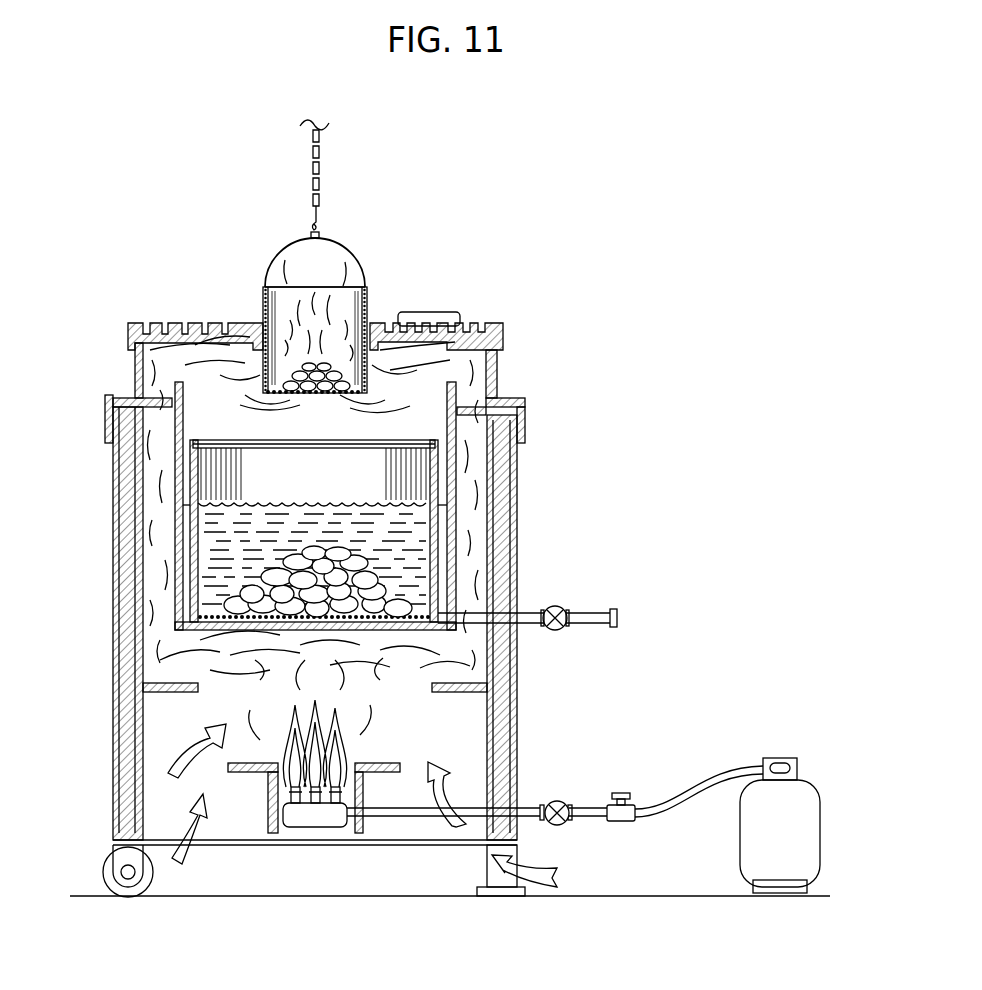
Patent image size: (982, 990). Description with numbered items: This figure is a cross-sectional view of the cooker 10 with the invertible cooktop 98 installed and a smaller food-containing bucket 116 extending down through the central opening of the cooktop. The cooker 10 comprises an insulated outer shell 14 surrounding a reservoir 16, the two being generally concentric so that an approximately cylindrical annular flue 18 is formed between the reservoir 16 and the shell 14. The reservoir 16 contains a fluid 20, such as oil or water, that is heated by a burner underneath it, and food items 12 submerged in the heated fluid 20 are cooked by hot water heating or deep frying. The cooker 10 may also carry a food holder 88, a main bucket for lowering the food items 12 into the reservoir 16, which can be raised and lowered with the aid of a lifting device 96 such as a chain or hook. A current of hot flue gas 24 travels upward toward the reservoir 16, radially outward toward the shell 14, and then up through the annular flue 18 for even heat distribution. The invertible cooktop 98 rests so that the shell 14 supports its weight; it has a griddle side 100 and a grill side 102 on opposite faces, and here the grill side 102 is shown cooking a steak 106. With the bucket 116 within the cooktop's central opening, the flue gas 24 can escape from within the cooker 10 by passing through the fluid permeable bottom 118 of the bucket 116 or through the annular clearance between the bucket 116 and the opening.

The cooker 10 is at (645, 253).
The food items 12 is at (345, 564).
The insulated outer shell 14 is at (112, 547).
The reservoir 16 is at (457, 487).
The annular flue 18 is at (460, 588).
The fluid 20 is at (322, 504).
The flue gas 24 is at (340, 280).
The food holder 88 is at (173, 583).
The lifting device 96 is at (322, 171).
The invertible cooktop 98 is at (503, 334).
The griddle side 100 is at (217, 353).
The grill side 102 is at (200, 322).
The steak 106 is at (438, 313).
The food-containing bucket 116 is at (263, 300).
The fluid permeable bottom 118 is at (308, 395).